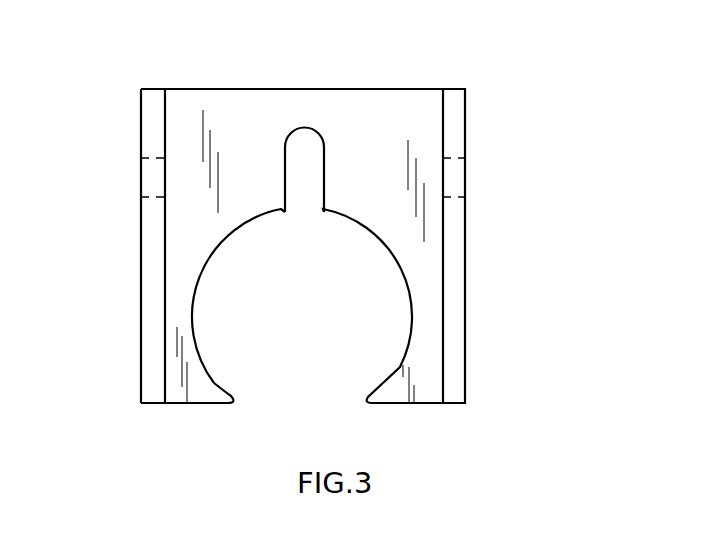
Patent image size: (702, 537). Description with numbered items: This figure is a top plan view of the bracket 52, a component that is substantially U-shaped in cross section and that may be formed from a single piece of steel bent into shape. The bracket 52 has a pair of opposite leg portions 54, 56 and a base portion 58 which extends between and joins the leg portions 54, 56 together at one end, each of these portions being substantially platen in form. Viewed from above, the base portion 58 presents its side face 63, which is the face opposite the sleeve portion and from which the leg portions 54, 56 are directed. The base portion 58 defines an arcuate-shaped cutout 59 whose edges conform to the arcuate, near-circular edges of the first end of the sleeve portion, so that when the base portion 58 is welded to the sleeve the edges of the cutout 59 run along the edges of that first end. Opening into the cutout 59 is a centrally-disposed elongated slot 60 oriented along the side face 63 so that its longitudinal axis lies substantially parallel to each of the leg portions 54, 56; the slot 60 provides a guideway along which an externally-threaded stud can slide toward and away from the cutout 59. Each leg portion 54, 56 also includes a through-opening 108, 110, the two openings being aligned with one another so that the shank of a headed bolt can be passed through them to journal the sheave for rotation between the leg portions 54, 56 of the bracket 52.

The bracket 52 is at (465, 290).
The leg portion 54 is at (145, 363).
The leg portion 56 is at (465, 375).
The base portion 58 is at (408, 118).
The arcuate-shaped cutout 59 is at (222, 383).
The centrally-disposed slot 60 is at (296, 145).
The side face 63 is at (193, 102).
The through-opening 108 is at (148, 197).
The through-opening 110 is at (465, 182).